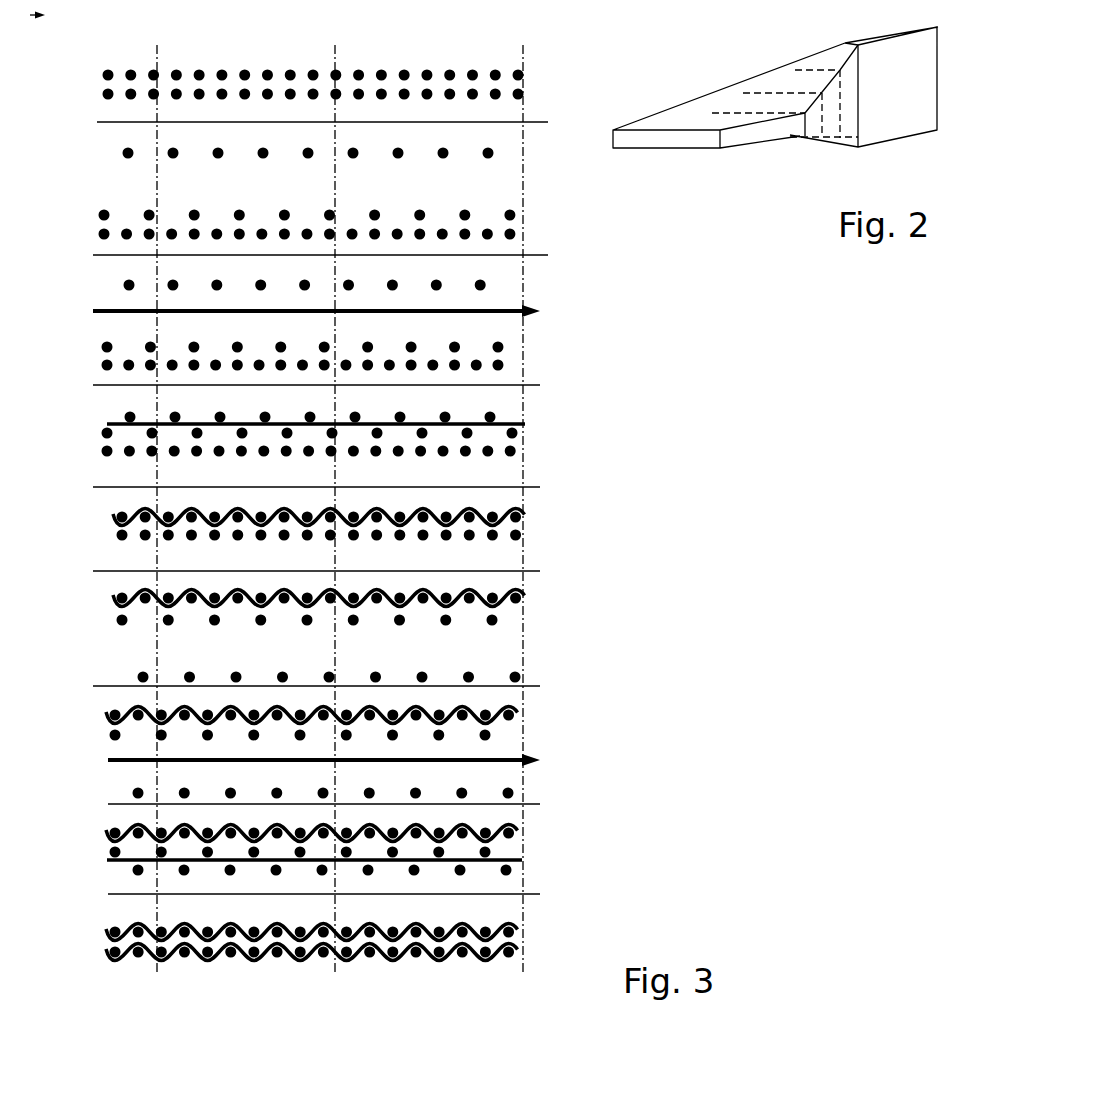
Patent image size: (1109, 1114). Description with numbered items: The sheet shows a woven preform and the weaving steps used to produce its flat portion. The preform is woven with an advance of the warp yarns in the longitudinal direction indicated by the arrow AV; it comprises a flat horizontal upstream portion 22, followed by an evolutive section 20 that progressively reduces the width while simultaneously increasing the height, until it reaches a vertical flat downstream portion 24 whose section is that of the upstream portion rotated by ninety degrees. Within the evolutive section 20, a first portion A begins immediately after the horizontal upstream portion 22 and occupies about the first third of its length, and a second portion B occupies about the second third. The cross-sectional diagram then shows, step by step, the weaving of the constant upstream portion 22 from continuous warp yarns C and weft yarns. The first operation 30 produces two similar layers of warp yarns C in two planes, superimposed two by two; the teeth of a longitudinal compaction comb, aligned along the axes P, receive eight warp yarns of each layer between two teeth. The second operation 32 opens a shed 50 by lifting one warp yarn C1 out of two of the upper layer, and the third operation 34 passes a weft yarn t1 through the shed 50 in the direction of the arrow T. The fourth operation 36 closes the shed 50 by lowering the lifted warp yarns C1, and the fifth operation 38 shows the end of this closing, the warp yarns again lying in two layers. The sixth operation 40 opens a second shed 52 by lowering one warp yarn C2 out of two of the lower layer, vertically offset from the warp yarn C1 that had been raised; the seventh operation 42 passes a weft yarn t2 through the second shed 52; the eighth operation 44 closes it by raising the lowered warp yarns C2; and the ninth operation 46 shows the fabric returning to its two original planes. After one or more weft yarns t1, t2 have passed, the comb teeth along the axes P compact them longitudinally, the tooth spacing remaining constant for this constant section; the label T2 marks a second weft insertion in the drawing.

In FIG. 2, the evolutive section 20 is at (770, 68).
In FIG. 2, the flat horizontal upstream portion 22 is at (668, 123).
In FIG. 2, the vertical flat downstream portion 24 is at (902, 30).
In FIG. 2, the first portion A is at (737, 107).
In FIG. 2, the second portion B is at (795, 80).
In FIG. 2, the arrow indicating longitudinal direction AV is at (857, 165).
In FIG. 3, the axes of the compaction comb teeth P is at (163, 55).
In FIG. 3, the first operation 30 is at (88, 83).
In FIG. 3, the second operation 32 is at (88, 191).
In FIG. 3, the third operation 34 is at (83, 327).
In FIG. 3, the fourth operation 36 is at (83, 443).
In FIG. 3, the fifth operation 38 is at (83, 536).
In FIG. 3, the sixth operation 40 is at (83, 634).
In FIG. 3, the seventh operation 42 is at (83, 750).
In FIG. 3, the eighth operation 44 is at (83, 860).
In FIG. 3, the ninth operation 46 is at (83, 949).
In FIG. 3, the shed 50 is at (132, 178).
In FIG. 3, the second shed 52 is at (113, 651).
In FIG. 3, the warp yarns C is at (522, 93).
In FIG. 3, the lifted warp yarn of the upper layer C1 is at (493, 152).
In FIG. 3, the lowered warp yarn of the lower layer C2 is at (518, 675).
In FIG. 3, the arrow indicating weft direction T is at (325, 533).
In FIG. 3, the first weft yarn t1 is at (502, 315).
In FIG. 3, the second weft yarn t2 is at (505, 763).
In FIG. 3, the second weft thread T2 is at (522, 862).